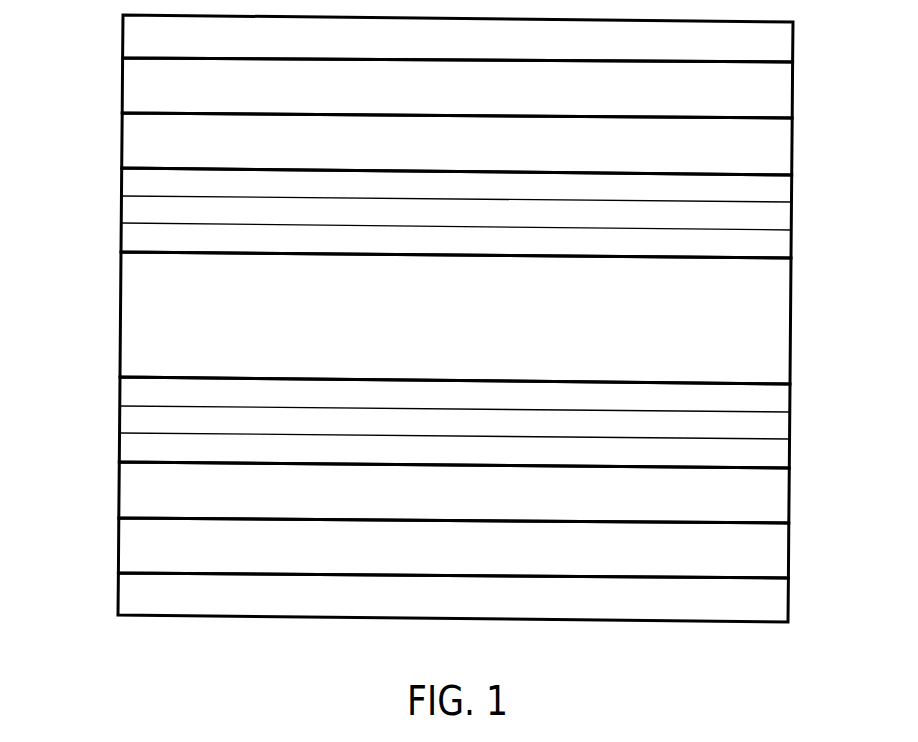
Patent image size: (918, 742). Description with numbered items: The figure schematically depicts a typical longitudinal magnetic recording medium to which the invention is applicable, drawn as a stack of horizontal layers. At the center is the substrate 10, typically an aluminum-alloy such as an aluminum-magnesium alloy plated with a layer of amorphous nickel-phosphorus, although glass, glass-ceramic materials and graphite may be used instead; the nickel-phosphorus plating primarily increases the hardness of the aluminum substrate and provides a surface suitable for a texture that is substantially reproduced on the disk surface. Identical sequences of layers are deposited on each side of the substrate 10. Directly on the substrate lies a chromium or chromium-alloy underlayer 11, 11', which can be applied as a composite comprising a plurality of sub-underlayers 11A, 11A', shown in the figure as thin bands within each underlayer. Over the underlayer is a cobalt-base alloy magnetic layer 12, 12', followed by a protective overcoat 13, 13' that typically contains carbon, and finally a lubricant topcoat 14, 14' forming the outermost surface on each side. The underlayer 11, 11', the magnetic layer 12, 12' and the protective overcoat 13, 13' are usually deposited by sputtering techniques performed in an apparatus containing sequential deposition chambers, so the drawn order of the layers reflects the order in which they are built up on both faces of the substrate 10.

The substrate 10 is at (455, 318).
The chromium or Cr-alloy underlayer 11 is at (496, 213).
The sub-underlayers 11A is at (401, 210).
The cobalt-base alloy magnetic layer 12 is at (457, 144).
The protective overcoat 13 is at (457, 88).
The lubricant topcoat 14 is at (458, 38).
The chromium or Cr-alloy underlayer 11' is at (496, 422).
The sub-underlayers 11A' is at (400, 421).
The cobalt-base alloy magnetic layer 12' is at (454, 492).
The protective overcoat 13' is at (453, 548).
The lubricant topcoat 14' is at (453, 597).